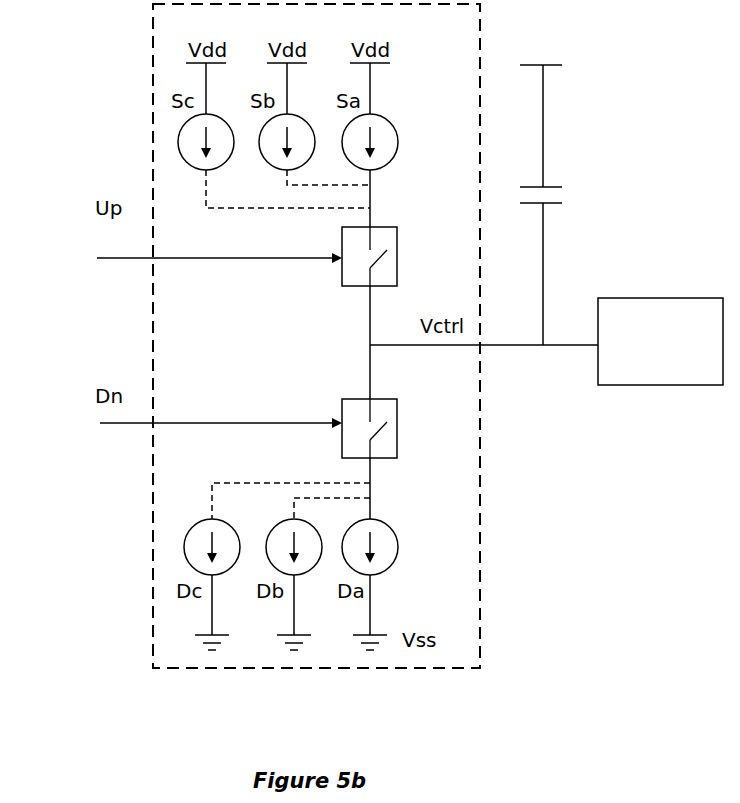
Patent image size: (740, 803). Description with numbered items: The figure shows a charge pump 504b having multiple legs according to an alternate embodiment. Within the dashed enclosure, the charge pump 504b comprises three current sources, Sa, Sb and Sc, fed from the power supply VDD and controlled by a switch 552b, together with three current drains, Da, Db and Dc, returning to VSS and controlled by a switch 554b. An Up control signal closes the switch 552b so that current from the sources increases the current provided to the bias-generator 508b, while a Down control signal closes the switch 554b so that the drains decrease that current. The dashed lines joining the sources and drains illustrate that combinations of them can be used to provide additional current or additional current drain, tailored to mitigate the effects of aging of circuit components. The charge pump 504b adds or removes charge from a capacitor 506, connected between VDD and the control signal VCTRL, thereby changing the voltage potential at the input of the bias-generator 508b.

The charge pump 504b is at (346, 359).
The switch 552b is at (398, 243).
The switch 554b is at (403, 448).
The capacitor 506 is at (565, 177).
The bias-generator 508b is at (660, 341).